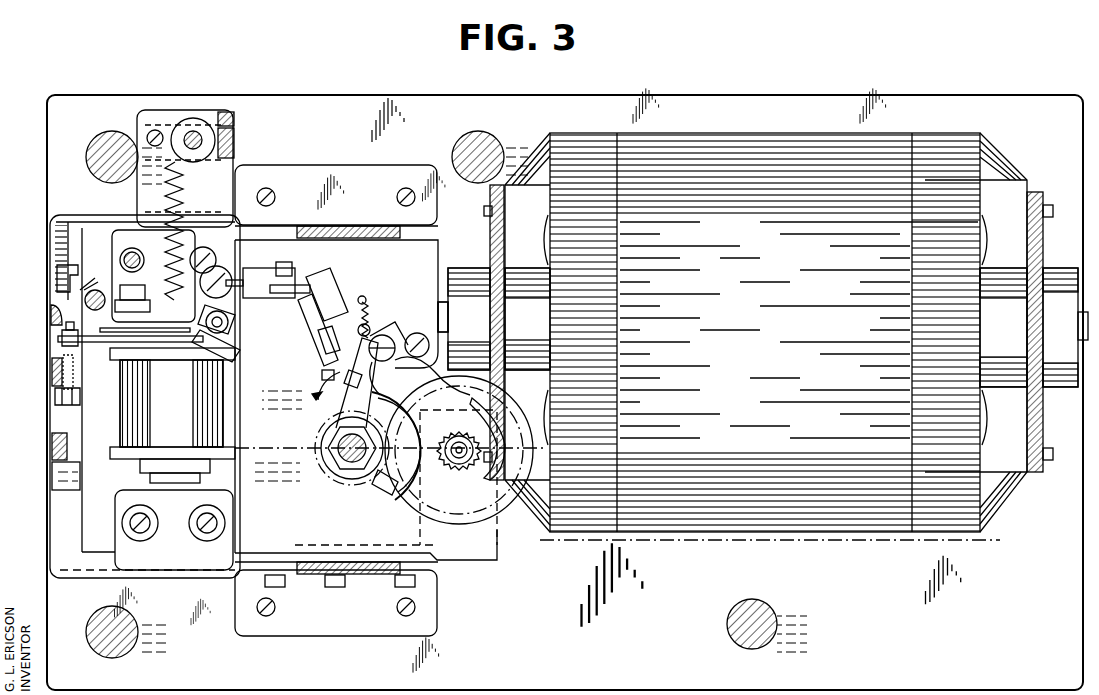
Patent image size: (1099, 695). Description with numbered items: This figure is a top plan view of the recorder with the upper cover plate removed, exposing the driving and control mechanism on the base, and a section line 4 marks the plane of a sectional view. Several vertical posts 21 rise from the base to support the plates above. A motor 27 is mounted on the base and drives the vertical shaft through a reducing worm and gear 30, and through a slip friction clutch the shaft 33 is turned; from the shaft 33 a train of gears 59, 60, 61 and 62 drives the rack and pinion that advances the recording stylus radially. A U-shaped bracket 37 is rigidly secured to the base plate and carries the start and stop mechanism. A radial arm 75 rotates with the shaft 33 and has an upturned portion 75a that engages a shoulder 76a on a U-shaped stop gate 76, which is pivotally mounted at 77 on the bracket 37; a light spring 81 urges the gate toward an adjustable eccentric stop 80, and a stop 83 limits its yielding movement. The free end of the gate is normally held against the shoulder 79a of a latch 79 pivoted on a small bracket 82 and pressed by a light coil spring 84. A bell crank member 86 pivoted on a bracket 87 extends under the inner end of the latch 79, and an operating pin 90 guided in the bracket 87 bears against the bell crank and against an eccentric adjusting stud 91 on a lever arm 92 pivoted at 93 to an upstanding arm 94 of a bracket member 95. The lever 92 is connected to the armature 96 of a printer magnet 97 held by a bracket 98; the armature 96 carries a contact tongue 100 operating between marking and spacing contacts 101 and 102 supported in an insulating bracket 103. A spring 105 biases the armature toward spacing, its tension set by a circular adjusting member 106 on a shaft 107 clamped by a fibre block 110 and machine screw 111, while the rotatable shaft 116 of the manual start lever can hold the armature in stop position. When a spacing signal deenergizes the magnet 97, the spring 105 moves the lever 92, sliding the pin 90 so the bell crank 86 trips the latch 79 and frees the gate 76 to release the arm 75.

The section line 4 is at (810, 505).
The vertical posts 21 is at (100, 150).
The motor 27 is at (780, 333).
The gear 30 is at (395, 490).
The shaft 33 is at (340, 452).
The U-shaped bracket 37 is at (292, 530).
The gear 59 is at (490, 410).
The gear 60 is at (454, 466).
The gear 61 is at (505, 500).
The gear 62 is at (378, 482).
The radial arm 75 is at (340, 406).
The upturned portion 75a is at (352, 386).
The stop gate 76 is at (388, 340).
The shoulder 76a is at (405, 372).
The pivot 77 is at (417, 333).
The latch 79 is at (322, 338).
The shoulder of latch 79a is at (325, 380).
The adjustable eccentric stop 80 is at (446, 338).
The light spring 81 is at (366, 300).
The small bracket 82 is at (330, 295).
The stop 83 is at (368, 325).
The light coil spring 84 is at (318, 345).
The bell crank member 86 is at (300, 280).
The bracket 87 is at (258, 278).
The operating pin 90 is at (215, 272).
The eccentric adjusting stud 91 is at (235, 280).
The lever arm 92 is at (229, 326).
The pivot 93 is at (232, 292).
The upstanding arm 94 is at (150, 310).
The bracket member 95 is at (148, 250).
The armature 96 is at (225, 352).
The printer magnet 97 is at (180, 413).
The bracket 98 is at (163, 503).
The contact tongue 100 is at (95, 344).
The marking contact 101 is at (70, 325).
The spacing contact 102 is at (55, 350).
The insulating bracket 103 is at (53, 447).
The spring 105 is at (182, 215).
The circular adjusting member 106 is at (200, 120).
The shaft 107 is at (193, 130).
The fibre block 110 is at (234, 140).
The machine screw 111 is at (234, 116).
The rotatable shaft 116 is at (70, 300).